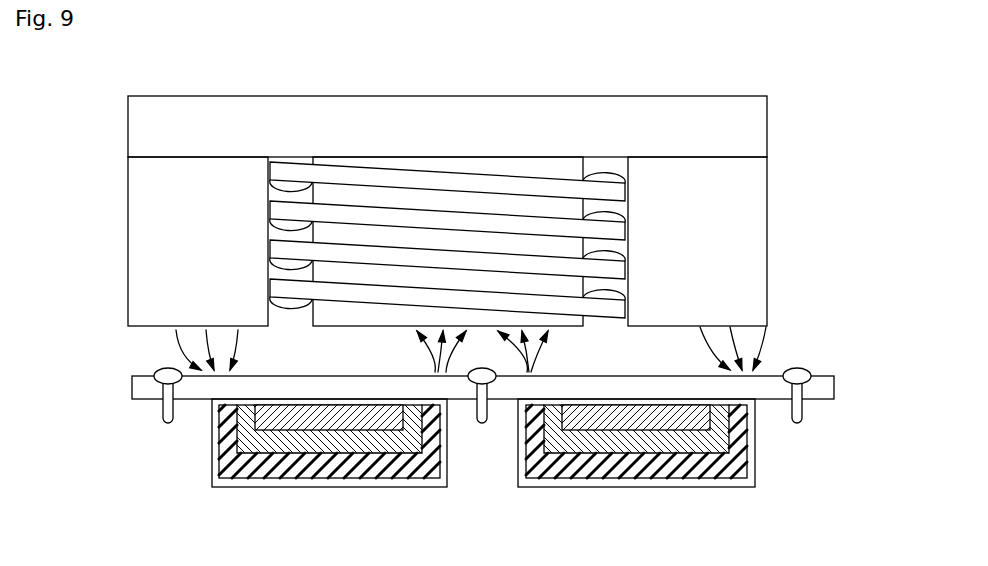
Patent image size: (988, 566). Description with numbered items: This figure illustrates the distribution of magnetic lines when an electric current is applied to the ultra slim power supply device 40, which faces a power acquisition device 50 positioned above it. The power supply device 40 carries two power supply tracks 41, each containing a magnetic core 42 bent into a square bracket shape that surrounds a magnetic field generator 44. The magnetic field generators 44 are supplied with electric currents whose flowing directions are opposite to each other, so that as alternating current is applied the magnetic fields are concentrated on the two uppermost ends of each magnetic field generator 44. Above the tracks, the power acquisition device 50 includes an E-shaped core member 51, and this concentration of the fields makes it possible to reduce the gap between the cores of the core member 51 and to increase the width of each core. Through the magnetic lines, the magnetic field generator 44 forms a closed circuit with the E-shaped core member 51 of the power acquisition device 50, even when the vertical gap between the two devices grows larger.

The ultra slim power supply device 40 is at (110, 386).
The power supply track 41 is at (636, 478).
The magnetic core 42 is at (650, 470).
The magnetic field generator 44 is at (693, 430).
The power acquisition device 50 is at (108, 212).
The E-shaped core member 51 is at (651, 103).